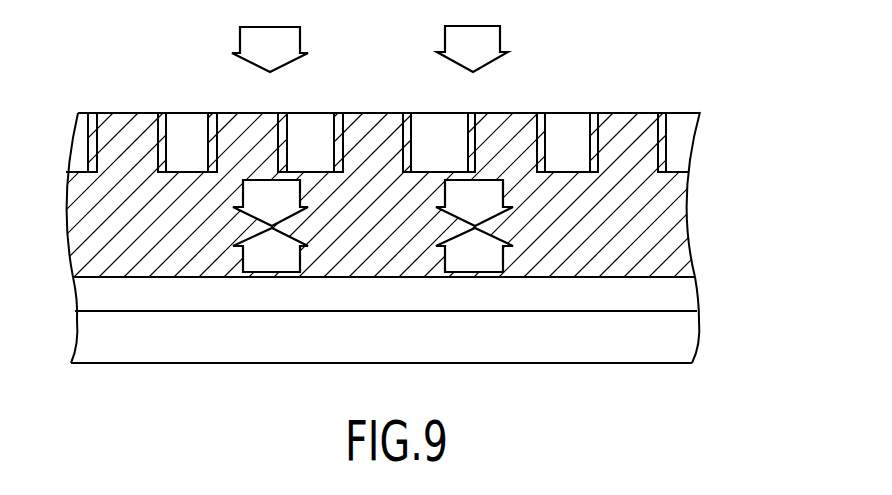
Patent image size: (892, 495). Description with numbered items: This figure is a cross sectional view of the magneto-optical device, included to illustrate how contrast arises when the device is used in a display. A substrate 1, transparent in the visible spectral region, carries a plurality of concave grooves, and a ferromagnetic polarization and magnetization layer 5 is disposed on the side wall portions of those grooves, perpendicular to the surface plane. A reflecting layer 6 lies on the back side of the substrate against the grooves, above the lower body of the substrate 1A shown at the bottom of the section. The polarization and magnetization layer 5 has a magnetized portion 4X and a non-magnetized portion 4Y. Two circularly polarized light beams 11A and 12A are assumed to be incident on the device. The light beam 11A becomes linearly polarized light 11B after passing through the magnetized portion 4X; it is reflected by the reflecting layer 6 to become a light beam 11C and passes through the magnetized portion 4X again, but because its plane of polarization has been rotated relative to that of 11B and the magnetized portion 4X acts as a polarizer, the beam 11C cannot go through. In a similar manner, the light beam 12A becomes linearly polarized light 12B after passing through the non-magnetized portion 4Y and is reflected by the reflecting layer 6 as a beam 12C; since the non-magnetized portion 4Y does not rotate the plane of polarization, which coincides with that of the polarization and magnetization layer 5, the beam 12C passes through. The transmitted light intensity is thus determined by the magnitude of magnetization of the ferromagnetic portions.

The substrate 1 is at (672, 213).
The substrate base 1A is at (687, 337).
The polarization and magnetization layer 5 is at (729, 113).
The reflecting layer 6 is at (688, 297).
The magnetized portion 4X is at (548, 143).
The non-magnetized portion 4Y is at (281, 142).
The light beam 11A is at (472, 49).
The linearly polarized light 11B is at (474, 203).
The light beam 11C is at (474, 251).
The light beam 12A is at (270, 49).
The linearly polarized light 12B is at (270, 203).
The light beam 12C is at (270, 251).